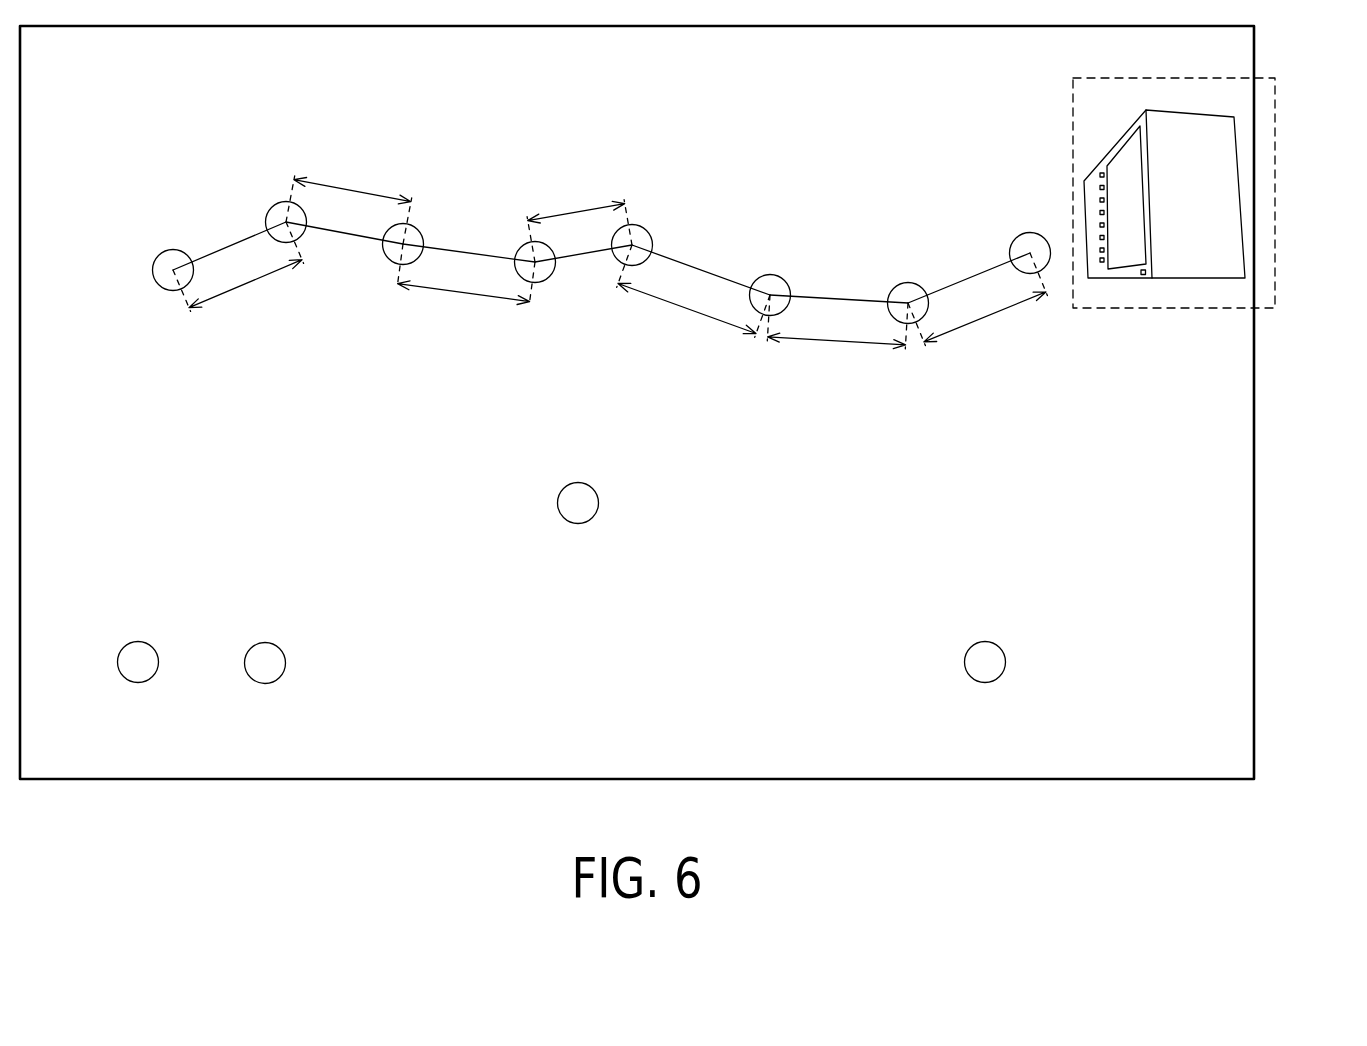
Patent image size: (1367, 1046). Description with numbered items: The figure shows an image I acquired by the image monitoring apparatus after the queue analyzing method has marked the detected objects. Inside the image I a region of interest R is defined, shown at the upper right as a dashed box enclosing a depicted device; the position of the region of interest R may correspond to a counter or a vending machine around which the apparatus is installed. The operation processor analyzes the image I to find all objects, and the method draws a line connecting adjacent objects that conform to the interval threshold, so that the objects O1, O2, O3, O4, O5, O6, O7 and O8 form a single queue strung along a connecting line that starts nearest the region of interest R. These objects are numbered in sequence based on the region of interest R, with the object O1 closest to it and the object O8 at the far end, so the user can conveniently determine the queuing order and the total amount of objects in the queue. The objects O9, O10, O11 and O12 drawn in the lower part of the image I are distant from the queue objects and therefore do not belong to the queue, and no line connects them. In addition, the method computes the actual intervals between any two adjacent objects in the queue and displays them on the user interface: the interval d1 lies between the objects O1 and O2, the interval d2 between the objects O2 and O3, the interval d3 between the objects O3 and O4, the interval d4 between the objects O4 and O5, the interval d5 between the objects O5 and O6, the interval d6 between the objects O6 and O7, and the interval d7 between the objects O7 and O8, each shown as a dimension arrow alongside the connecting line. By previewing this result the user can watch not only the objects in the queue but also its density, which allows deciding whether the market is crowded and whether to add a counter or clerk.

The object O1 is at (1030, 253).
The object O2 is at (908, 303).
The object O3 is at (770, 295).
The object O4 is at (632, 245).
The object O5 is at (540, 270).
The object O6 is at (412, 238).
The object O7 is at (286, 222).
The object O8 is at (173, 268).
The object O9 is at (985, 662).
The object O10 is at (578, 505).
The object O11 is at (265, 662).
The object O12 is at (138, 660).
The actual interval d1 is at (977, 303).
The actual interval d2 is at (837, 337).
The actual interval d3 is at (693, 294).
The actual interval d4 is at (579, 223).
The actual interval d5 is at (466, 286).
The actual interval d6 is at (349, 202).
The actual interval d7 is at (238, 270).
The region of interest R is at (1286, 138).
The image I is at (637, 427).